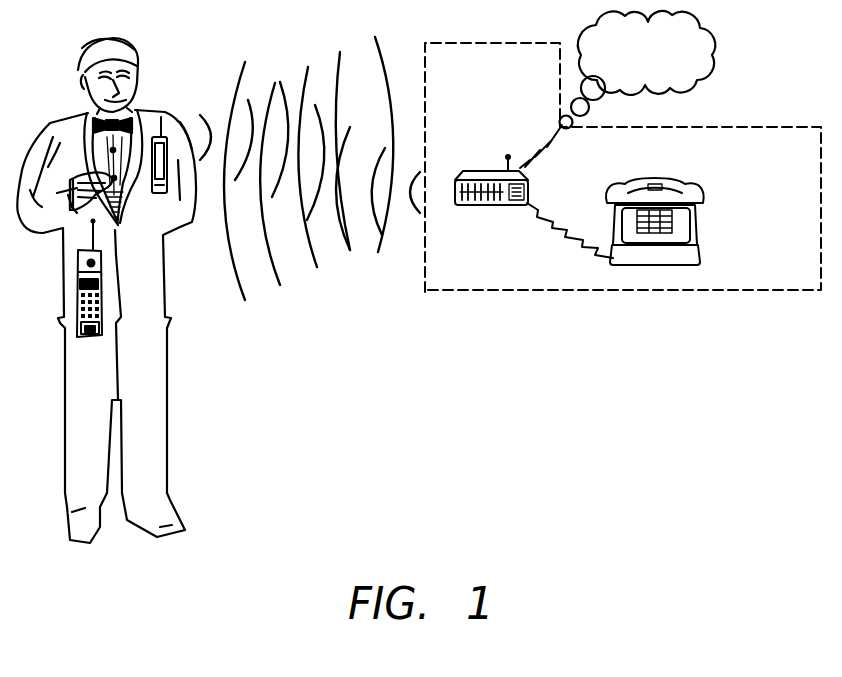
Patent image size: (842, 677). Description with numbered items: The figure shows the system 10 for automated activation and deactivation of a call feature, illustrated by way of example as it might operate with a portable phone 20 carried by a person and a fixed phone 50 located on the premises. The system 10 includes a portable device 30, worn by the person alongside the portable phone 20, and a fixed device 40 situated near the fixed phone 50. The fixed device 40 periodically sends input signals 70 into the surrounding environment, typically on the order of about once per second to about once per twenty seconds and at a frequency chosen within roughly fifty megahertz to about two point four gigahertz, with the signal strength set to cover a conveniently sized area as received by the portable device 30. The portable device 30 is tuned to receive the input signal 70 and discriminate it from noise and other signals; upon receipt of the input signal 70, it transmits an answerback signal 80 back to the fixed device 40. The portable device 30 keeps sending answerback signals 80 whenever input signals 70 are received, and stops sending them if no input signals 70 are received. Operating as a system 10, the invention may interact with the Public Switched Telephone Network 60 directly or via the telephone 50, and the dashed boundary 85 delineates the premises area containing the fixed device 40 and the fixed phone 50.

The system 10 is at (589, 469).
The portable phone 20 is at (72, 295).
The portable device 30 is at (170, 142).
The fixed device 40 is at (490, 168).
The fixed phone 50 is at (702, 193).
The Public Switched Telephone Network (PSTN) 60 is at (703, 35).
The input signals 70 is at (245, 300).
The answerback signals 80 is at (378, 252).
The premises boundary 85 is at (713, 290).